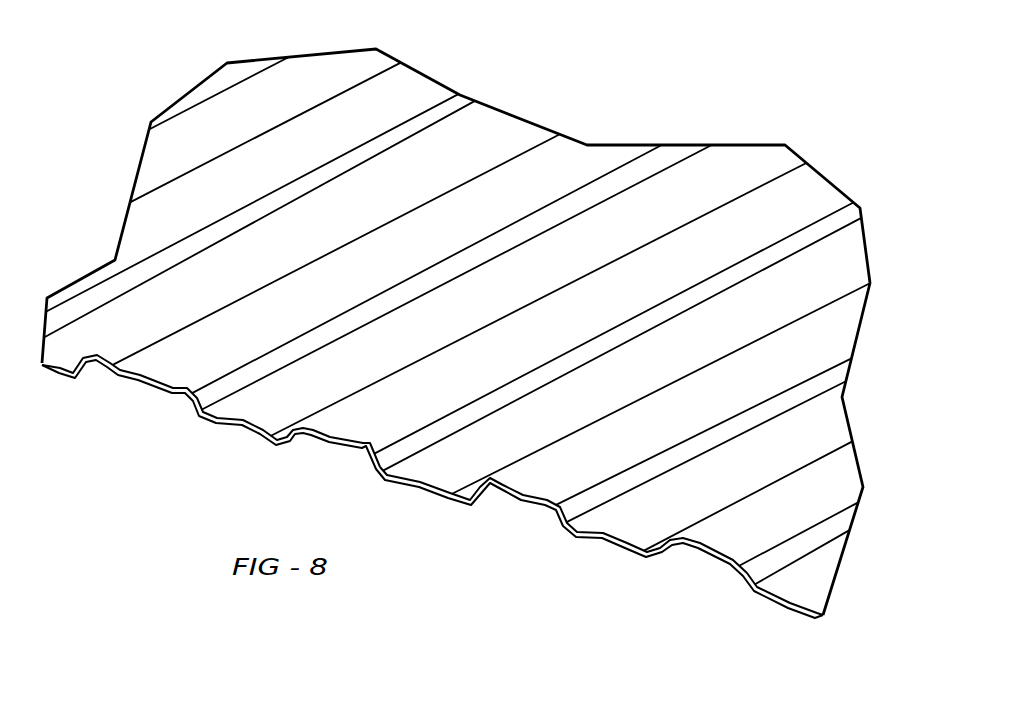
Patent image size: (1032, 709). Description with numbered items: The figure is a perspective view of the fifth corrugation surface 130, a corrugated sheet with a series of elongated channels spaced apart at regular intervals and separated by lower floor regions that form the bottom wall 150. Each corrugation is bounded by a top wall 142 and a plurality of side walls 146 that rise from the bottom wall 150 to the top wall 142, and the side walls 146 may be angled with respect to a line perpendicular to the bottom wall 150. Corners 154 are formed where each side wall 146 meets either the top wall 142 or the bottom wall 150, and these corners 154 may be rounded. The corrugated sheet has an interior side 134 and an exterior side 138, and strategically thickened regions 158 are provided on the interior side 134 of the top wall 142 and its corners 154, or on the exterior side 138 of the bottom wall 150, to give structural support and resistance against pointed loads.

The fifth corrugation surface 130 is at (818, 153).
The interior side 134 is at (792, 612).
The exterior side 138 is at (803, 585).
The top wall 142 is at (573, 163).
The side walls 146 is at (656, 163).
The bottom wall 150 is at (713, 168).
The corners 154 is at (80, 370).
The thickened regions 158 is at (487, 484).